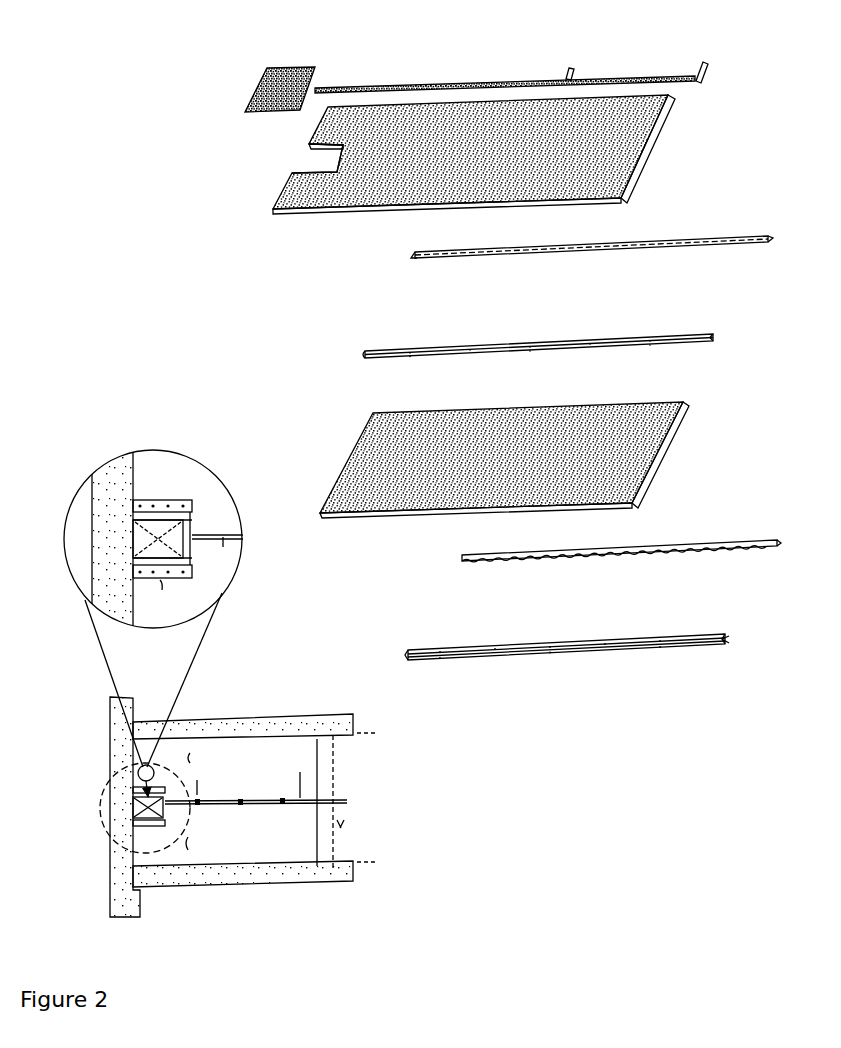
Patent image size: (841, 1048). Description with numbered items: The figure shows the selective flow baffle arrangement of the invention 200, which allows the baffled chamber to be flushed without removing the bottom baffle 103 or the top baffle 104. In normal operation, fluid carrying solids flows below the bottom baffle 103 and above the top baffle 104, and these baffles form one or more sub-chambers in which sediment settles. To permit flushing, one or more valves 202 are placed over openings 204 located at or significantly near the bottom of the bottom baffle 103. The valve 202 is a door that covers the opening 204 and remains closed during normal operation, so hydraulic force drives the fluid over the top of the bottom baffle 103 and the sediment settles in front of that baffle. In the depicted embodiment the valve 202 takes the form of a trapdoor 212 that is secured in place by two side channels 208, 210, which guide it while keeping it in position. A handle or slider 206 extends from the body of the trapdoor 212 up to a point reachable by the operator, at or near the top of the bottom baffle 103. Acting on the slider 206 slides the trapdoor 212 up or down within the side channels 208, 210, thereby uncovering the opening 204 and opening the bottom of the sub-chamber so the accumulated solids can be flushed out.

The invention 200 is at (240, 203).
The valve 202 is at (270, 77).
The opening 204 is at (312, 157).
The handle or slider 206 is at (647, 76).
The bottom baffle 103 is at (625, 135).
The top baffle 104 is at (650, 403).
The side channel 208 is at (203, 539).
The side channel 210 is at (138, 505).
The trapdoor 212 is at (163, 540).